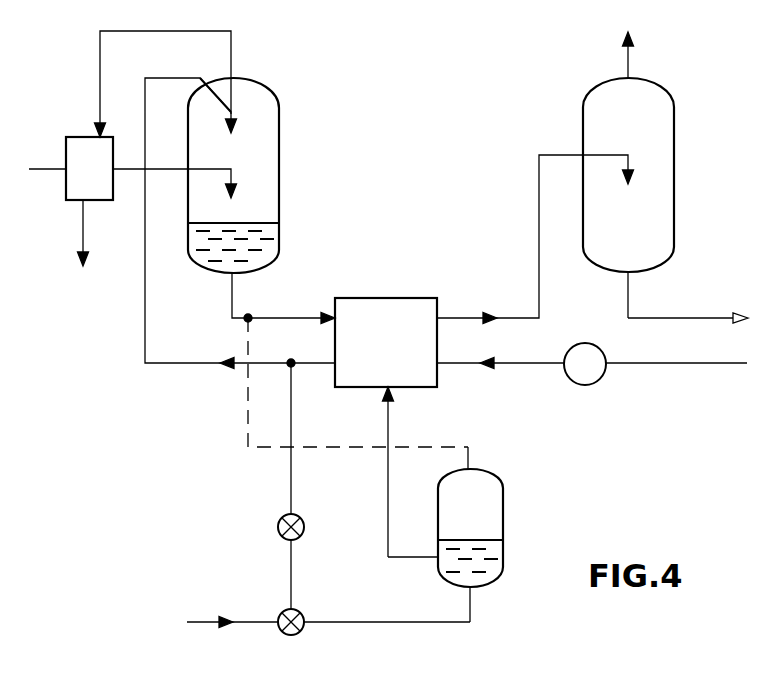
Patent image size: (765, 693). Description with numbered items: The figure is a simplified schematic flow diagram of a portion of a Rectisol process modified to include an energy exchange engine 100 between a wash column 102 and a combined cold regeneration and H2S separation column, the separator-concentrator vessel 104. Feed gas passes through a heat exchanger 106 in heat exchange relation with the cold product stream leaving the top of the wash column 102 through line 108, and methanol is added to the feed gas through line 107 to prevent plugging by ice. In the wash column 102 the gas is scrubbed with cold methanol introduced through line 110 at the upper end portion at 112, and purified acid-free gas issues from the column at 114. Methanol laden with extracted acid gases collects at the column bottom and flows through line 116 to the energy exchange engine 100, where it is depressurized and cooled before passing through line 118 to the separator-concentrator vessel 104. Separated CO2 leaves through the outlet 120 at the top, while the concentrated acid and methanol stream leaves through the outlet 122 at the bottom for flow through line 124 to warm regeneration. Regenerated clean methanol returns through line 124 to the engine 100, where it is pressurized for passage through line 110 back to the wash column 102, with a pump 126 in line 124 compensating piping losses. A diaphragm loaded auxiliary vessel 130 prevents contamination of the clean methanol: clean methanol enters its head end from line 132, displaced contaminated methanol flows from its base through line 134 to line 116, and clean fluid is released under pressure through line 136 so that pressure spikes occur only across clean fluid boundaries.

The heat exchanger 106 is at (77, 135).
The line 107 is at (129, 182).
The line 108 is at (232, 52).
The line 110 is at (145, 327).
The methanol inlet 112 is at (233, 113).
The purified gas outlet 114 is at (232, 88).
The wash column 102 is at (279, 198).
The line 116 is at (232, 297).
The energy exchange engine 100 is at (393, 295).
The line 118 is at (539, 238).
The separator-concentrator vessel 104 is at (674, 217).
The outlet 120 is at (628, 60).
The outlet 122 is at (630, 275).
The line 124 is at (628, 300).
The pump 126 is at (596, 383).
The diaphragm loaded auxiliary vessel 130 is at (503, 480).
The line 132 is at (413, 623).
The line 134 is at (258, 448).
The line 136 is at (387, 495).